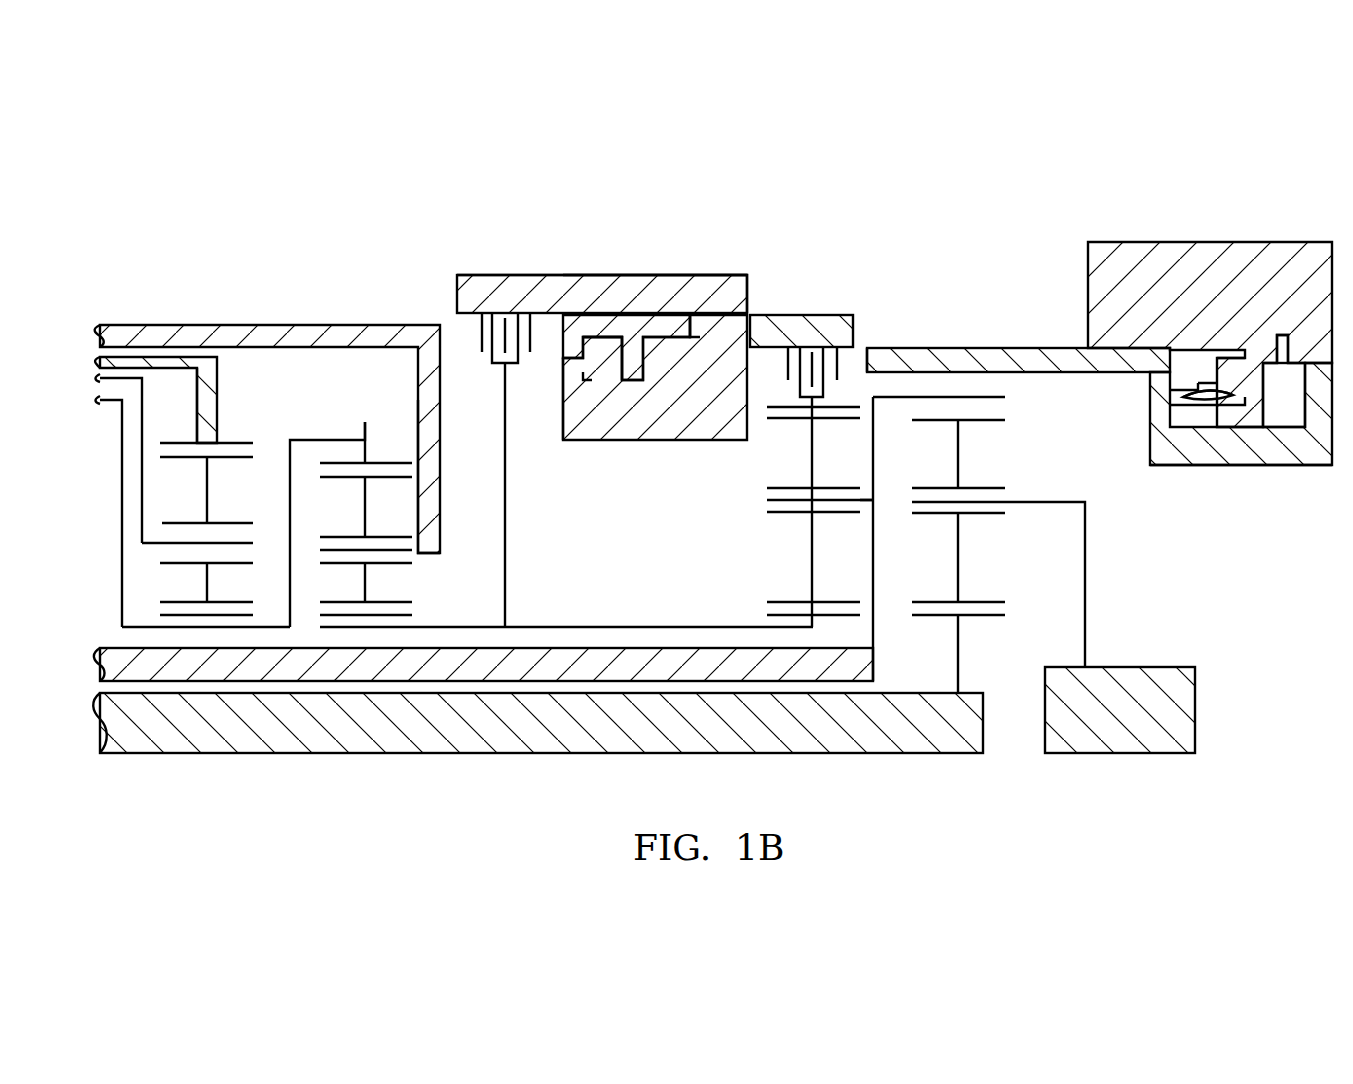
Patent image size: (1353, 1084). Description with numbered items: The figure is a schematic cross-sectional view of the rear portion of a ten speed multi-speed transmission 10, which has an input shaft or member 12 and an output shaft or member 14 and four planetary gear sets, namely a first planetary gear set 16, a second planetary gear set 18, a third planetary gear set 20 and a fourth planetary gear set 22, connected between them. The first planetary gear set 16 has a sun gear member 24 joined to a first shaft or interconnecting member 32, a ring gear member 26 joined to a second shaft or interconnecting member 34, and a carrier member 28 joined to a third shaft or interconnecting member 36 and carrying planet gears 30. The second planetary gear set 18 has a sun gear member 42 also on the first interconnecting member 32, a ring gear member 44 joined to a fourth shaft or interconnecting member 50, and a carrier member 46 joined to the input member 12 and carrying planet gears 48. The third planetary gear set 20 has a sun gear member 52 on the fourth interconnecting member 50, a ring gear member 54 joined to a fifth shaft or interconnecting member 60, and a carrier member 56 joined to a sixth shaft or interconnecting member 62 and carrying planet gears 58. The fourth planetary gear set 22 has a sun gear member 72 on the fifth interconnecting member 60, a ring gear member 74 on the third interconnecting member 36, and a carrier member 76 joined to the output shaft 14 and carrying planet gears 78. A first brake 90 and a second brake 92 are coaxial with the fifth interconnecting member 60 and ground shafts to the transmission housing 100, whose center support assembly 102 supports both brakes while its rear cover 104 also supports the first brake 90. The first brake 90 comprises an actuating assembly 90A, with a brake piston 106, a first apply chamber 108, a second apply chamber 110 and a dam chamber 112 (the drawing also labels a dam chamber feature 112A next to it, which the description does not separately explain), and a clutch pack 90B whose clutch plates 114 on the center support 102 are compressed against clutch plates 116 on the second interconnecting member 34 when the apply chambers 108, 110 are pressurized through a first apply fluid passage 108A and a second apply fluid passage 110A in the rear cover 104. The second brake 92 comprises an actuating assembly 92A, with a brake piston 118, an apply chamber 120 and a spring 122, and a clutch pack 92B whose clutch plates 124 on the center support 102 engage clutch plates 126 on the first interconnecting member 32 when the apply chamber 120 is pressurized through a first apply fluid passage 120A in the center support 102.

The multi-speed transmission 10 is at (716, 158).
The input shaft or member 12 is at (290, 324).
The output shaft or member 14 is at (1127, 753).
The first planetary gear set 16 is at (714, 551).
The second planetary gear set 18 is at (340, 402).
The third planetary gear set 20 is at (216, 278).
The fourth planetary gear set 22 is at (927, 335).
The sun gear member 24 is at (797, 627).
The ring gear member 26 is at (813, 402).
The carrier member 28 is at (782, 502).
The planet gears 30 is at (793, 513).
The first shaft or interconnecting member 32 is at (557, 627).
The second shaft or interconnecting member 34 is at (815, 402).
The third shaft or interconnecting member 36 is at (875, 550).
The sun gear member 42 is at (395, 617).
The ring gear member 44 is at (388, 463).
The carrier member 46 is at (440, 438).
The planet gears 48 is at (387, 537).
The fourth shaft or interconnecting member 50 is at (290, 453).
The sun gear member 52 is at (237, 617).
The ring gear member 54 is at (178, 443).
The carrier member 56 is at (158, 540).
The planet gears 58 is at (230, 520).
The fifth shaft or interconnecting member 60 is at (218, 374).
The sixth shaft or interconnecting member 62 is at (140, 394).
The sun gear member 72 is at (993, 617).
The ring gear member 74 is at (987, 397).
The carrier member 76 is at (1037, 502).
The planet gears 78 is at (993, 515).
The first brake 90 is at (873, 324).
The actuating assembly 90A is at (1214, 543).
The clutch pack 90B is at (841, 355).
The second brake 92 is at (606, 252).
The actuating assembly 92A is at (686, 253).
The clutch pack 92B is at (531, 394).
The transmission housing 100 is at (627, 275).
The center support assembly 102 is at (745, 285).
The rear cover 104 is at (1118, 242).
The brake piston 106 is at (1027, 348).
The first apply chamber 108 is at (1180, 356).
The first apply fluid passage 108A is at (1225, 357).
The second apply chamber 110 is at (1222, 396).
The second apply fluid passage 110A is at (1228, 391).
The dam chamber 112 is at (1292, 337).
The bearing race 112A is at (1283, 335).
The clutch plates 114 is at (787, 372).
The clutch plates 116 is at (797, 393).
The brake piston 118 is at (592, 327).
The apply chamber 120 is at (657, 318).
The first apply fluid passage 120A is at (703, 323).
The spring 122 is at (578, 366).
The clutch plates 124 is at (482, 338).
The clutch plates 126 is at (492, 355).